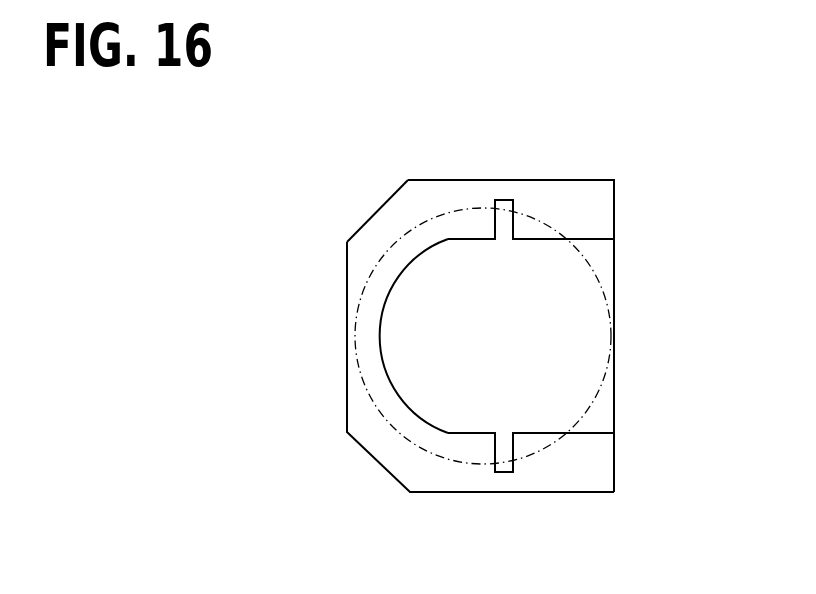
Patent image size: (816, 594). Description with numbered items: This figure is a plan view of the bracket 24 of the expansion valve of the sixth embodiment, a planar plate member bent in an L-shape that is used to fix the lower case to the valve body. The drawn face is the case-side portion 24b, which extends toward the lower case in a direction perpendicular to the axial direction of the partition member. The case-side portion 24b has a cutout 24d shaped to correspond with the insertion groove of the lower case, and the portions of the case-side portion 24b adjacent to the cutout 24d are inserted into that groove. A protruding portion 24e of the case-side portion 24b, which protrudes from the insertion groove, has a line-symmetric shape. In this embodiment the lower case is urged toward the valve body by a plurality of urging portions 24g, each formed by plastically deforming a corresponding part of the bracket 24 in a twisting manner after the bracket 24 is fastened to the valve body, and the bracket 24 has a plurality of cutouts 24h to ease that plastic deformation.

The bracket 24 is at (437, 179).
The urging portion 24g is at (560, 210).
The protruding portion 24e is at (378, 243).
The cutout 24h is at (508, 218).
The cutout 24d is at (473, 433).
The case-side portion 24b is at (457, 474).